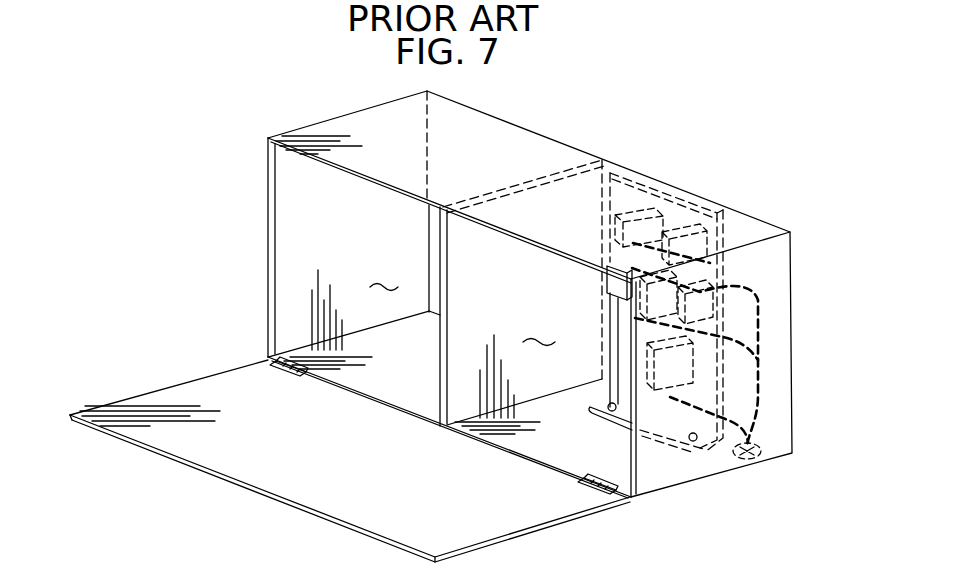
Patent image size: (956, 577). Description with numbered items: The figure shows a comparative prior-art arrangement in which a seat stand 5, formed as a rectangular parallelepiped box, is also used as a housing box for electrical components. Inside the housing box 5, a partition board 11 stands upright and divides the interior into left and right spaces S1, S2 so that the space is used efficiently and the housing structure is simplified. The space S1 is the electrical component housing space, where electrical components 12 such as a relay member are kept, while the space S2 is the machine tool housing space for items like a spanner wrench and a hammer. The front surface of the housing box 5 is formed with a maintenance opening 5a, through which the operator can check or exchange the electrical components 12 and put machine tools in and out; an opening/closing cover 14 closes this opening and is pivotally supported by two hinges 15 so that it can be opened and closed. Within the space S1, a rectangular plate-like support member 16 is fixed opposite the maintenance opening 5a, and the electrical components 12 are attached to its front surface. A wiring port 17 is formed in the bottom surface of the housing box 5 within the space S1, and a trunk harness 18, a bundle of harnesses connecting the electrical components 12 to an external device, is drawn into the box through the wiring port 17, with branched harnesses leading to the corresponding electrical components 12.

The seat stand 5 is at (532, 127).
The maintenance opening 5a is at (402, 217).
The partition board 11 is at (437, 361).
The electrical components 12 is at (677, 222).
The opening/closing cover 14 is at (273, 497).
The hinges 15 is at (280, 371).
The support member 16 is at (690, 198).
The wiring port 17 is at (762, 438).
The trunk harness 18 is at (760, 393).
The electrical component housing space S1 is at (541, 328).
The machine tool housing space S2 is at (384, 272).